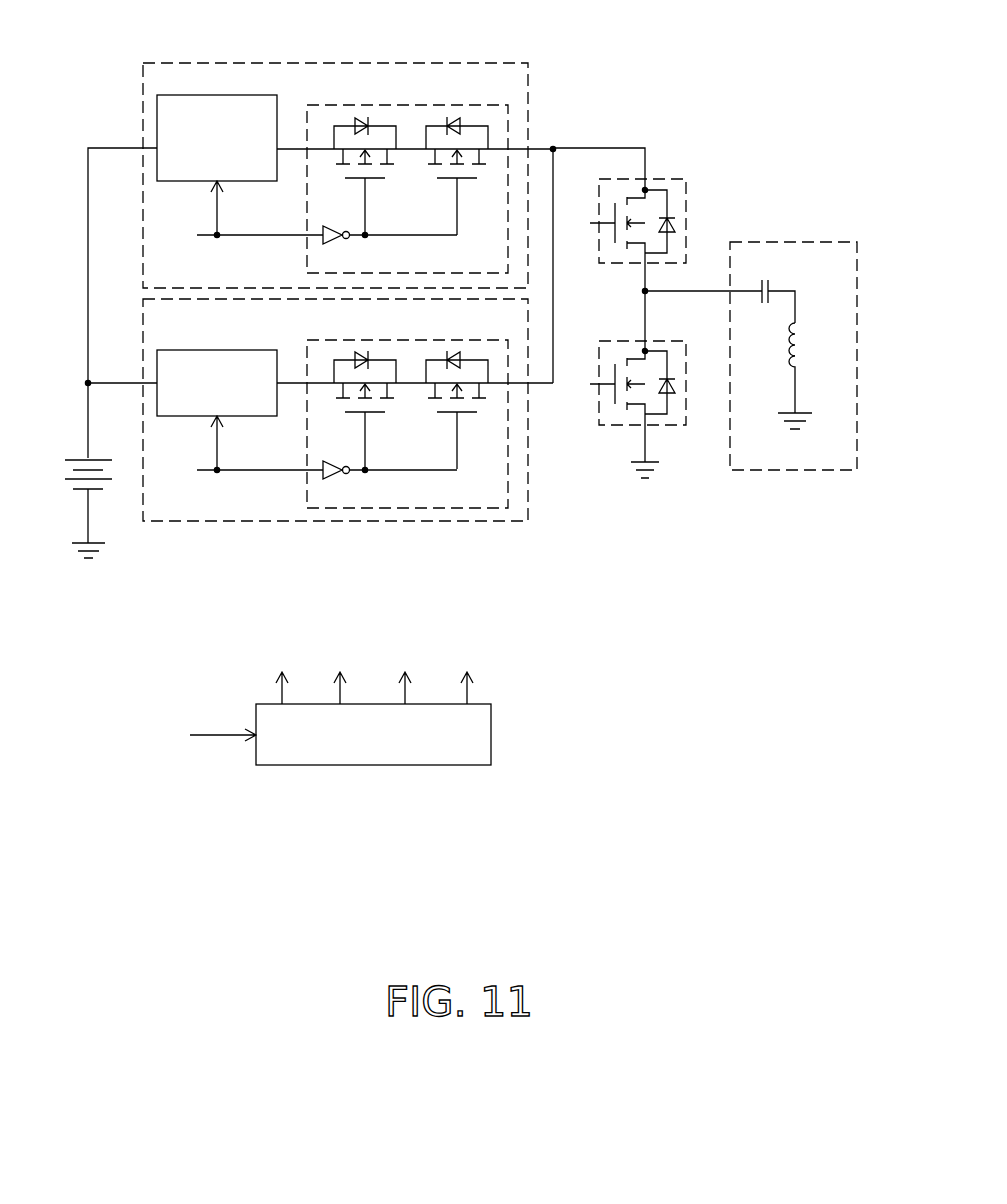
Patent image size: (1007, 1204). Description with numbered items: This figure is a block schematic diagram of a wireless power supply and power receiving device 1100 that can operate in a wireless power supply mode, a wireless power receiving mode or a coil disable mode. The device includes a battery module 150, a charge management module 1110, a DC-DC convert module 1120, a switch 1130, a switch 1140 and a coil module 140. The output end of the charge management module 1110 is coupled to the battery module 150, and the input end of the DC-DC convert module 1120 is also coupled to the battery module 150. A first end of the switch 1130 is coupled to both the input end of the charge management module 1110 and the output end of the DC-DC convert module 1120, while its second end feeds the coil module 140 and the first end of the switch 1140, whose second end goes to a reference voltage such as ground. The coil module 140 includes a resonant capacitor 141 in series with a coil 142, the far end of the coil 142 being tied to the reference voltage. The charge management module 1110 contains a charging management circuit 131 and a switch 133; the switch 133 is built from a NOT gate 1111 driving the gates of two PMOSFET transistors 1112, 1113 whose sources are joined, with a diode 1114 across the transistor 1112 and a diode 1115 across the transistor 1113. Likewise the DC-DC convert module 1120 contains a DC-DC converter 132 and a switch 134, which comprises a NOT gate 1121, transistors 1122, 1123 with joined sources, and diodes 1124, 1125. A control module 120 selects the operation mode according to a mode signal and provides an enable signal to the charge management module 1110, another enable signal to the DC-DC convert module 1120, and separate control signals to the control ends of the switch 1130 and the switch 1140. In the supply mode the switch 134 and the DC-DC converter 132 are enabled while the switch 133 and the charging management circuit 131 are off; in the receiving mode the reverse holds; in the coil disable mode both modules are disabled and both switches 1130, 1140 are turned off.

The wireless power supply and power receiving device 1100 is at (565, 813).
The charge management module 1110 is at (290, 63).
The DC-DC convert module 1120 is at (400, 521).
The charging management circuit 131 is at (246, 95).
The DC-DC converter 132 is at (202, 350).
The switch 133 is at (508, 120).
The switch 134 is at (508, 483).
The NOT gate 1111 is at (332, 242).
The transistor 1112 is at (385, 175).
The transistor 1113 is at (477, 175).
The diode 1114 is at (370, 117).
The diode 1115 is at (452, 114).
The NOT gate 1121 is at (332, 477).
The transistor 1122 is at (385, 409).
The transistor 1123 is at (477, 409).
The diode 1124 is at (370, 351).
The diode 1125 is at (452, 348).
The switch 1130 is at (664, 178).
The switch 1140 is at (622, 427).
The coil module 140 is at (787, 472).
The resonant capacitor 141 is at (768, 280).
The coil 142 is at (804, 336).
The battery module 150 is at (110, 487).
The control module 120 is at (355, 766).